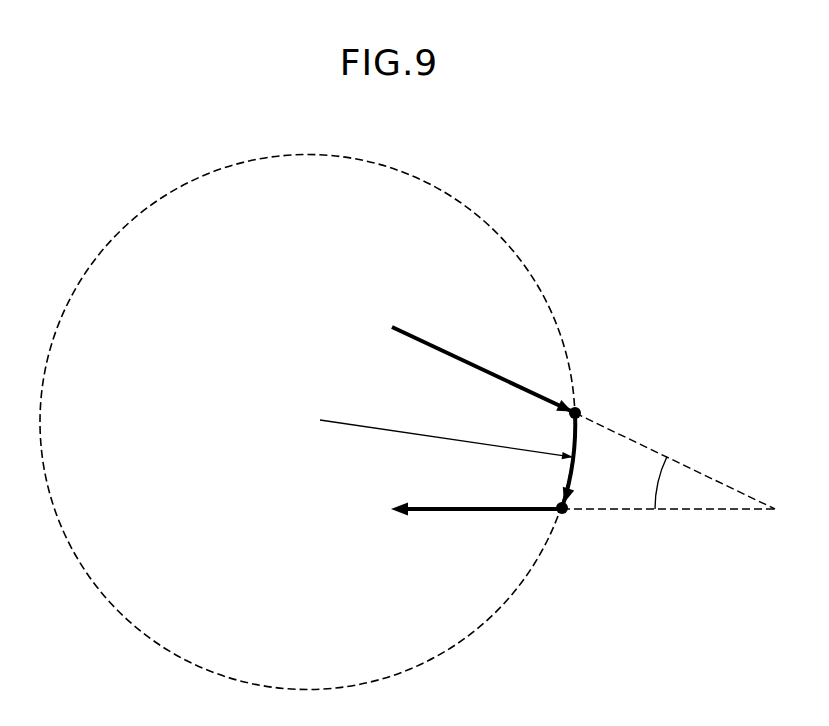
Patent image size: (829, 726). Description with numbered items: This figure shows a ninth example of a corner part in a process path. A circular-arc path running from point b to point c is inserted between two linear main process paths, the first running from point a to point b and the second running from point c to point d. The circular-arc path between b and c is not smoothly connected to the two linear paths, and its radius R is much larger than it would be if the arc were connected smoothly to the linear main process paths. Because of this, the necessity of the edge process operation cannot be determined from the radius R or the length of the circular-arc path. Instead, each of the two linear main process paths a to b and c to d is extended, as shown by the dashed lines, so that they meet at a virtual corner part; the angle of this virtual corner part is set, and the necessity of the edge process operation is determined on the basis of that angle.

The start point of linear main process path ab a is at (472, 362).
The end point of linear main process path ab and start of circular-arc path bc b is at (584, 406).
The end point of circular-arc path bc and start of linear main process path cd c is at (564, 525).
The end point of linear main process path cd d is at (474, 526).
The radius of the circular-arc path bc R is at (446, 435).